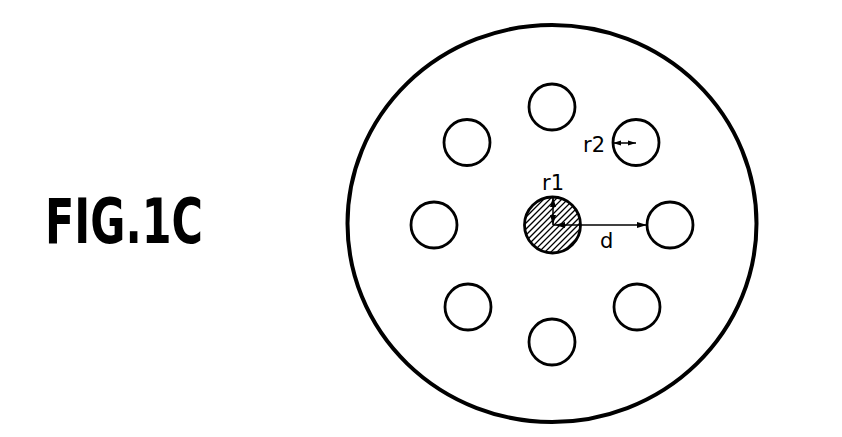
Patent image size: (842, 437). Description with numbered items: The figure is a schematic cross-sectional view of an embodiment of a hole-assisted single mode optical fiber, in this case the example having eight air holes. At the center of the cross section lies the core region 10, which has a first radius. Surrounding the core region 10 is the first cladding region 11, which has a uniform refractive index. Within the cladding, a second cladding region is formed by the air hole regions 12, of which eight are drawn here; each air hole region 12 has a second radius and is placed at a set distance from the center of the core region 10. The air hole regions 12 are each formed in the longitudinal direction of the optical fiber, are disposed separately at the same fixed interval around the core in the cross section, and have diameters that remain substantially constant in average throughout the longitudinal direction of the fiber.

The core region 10 is at (526, 213).
The first cladding region 11 is at (403, 273).
The air hole regions 12 is at (465, 307).